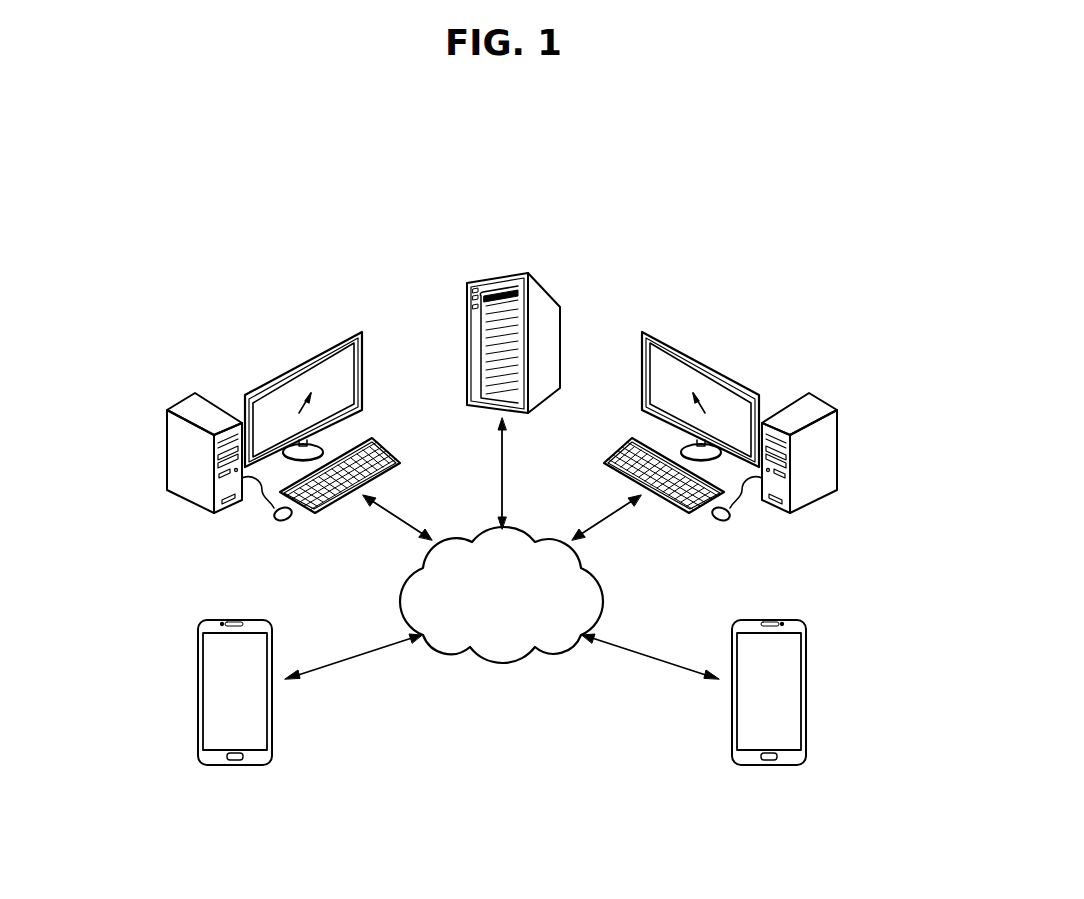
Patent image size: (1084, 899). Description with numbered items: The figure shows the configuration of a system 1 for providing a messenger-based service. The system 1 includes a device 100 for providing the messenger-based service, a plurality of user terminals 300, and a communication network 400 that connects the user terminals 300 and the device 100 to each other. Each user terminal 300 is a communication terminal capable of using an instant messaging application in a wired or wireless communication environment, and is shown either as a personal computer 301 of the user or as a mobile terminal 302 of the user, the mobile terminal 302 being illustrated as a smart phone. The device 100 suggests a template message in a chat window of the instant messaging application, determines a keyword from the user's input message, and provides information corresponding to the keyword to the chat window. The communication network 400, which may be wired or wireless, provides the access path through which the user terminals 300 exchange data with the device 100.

The system 1 is at (759, 209).
The device 100 is at (540, 283).
The user terminals 300 is at (110, 497).
The personal computer 301 is at (167, 447).
The mobile terminal 302 is at (197, 688).
The communication network 400 is at (606, 591).